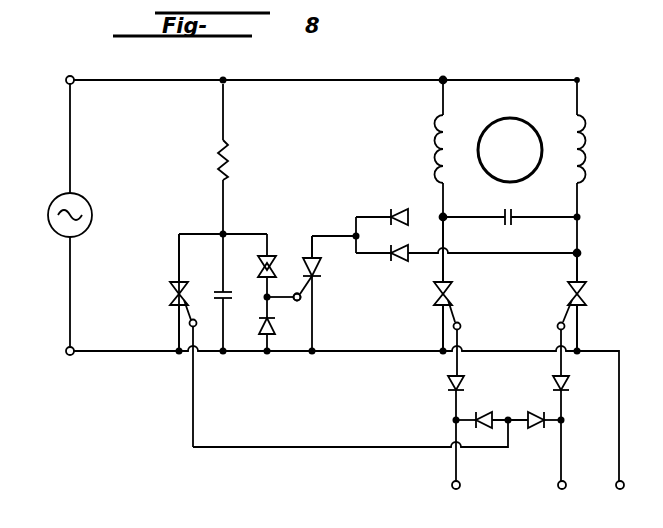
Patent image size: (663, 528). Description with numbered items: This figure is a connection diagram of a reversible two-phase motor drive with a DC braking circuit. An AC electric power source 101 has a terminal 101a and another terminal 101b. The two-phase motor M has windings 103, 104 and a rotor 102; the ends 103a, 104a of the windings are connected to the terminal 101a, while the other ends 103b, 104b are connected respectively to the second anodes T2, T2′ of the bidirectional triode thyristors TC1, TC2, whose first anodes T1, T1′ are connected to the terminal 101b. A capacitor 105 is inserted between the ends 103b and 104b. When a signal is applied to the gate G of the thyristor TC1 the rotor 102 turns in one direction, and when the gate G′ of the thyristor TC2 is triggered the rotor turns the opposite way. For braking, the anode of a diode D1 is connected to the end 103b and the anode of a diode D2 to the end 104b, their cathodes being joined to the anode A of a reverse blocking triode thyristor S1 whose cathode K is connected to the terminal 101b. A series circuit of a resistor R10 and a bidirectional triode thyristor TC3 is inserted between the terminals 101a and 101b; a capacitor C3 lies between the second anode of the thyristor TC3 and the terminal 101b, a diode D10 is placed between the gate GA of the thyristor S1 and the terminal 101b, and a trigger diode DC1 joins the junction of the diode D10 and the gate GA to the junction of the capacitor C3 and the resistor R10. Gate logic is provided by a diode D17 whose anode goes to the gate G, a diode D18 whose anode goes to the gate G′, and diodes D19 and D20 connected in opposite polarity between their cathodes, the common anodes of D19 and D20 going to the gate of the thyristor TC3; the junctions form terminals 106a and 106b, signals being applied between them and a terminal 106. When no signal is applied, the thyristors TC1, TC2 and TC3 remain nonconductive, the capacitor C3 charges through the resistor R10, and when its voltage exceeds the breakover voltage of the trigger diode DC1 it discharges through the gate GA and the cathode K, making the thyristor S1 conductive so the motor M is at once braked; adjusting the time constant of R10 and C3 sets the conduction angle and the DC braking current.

The AC electric power source 101 is at (46, 215).
The terminal of the power source 101a is at (66, 80).
The other terminal of the power source 101b is at (66, 351).
The resistor R10 is at (216, 160).
The rotor 102 is at (490, 126).
The two-phase motor M is at (548, 114).
The winding 103 is at (434, 154).
The winding 104 is at (586, 152).
The end of the winding 103a is at (445, 78).
The other end of the winding 103b is at (444, 222).
The end of the winding 104a is at (579, 78).
The other end of the winding 104b is at (576, 250).
The capacitor 105 is at (502, 212).
The diode D1 is at (404, 198).
The diode D2 is at (397, 258).
The trigger diode DC1 is at (270, 252).
The diode D10 is at (260, 338).
The capacitor C3 is at (232, 286).
The reverse blocking triode thyristor S1 is at (322, 270).
The anode of the thyristor A is at (314, 255).
The cathode of the thyristor K is at (313, 283).
The gate of the thyristor GA is at (296, 304).
The bidirectional triode thyristor TC3 is at (168, 297).
The bidirectional triode thyristor TC1 is at (430, 297).
The first anode of the thyristor T1 is at (428, 328).
The second anode of the thyristor T2 is at (448, 282).
The gate of the thyristor G is at (461, 328).
The bidirectional triode thyristor TC2 is at (588, 296).
The first anode of the thyristor T1′ is at (598, 328).
The second anode of the thyristor T2′ is at (574, 284).
The gate of the thyristor G′ is at (559, 328).
The diode D17 is at (446, 384).
The diode D18 is at (570, 384).
The diode D19 is at (488, 404).
The diode D20 is at (535, 404).
The terminal 106 is at (624, 489).
The terminal 106a is at (460, 489).
The terminal 106b is at (572, 495).